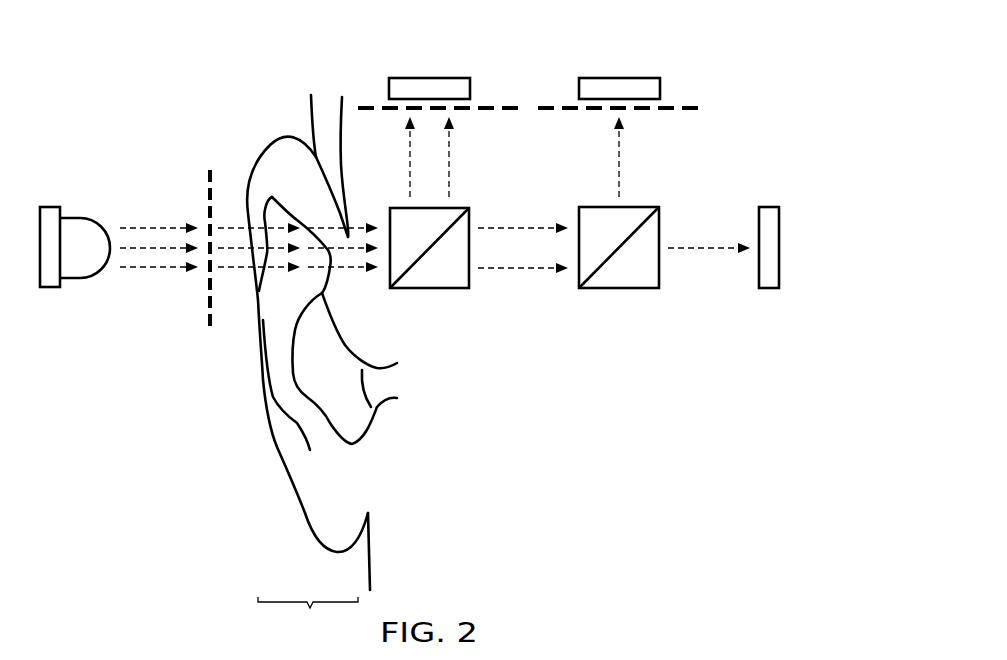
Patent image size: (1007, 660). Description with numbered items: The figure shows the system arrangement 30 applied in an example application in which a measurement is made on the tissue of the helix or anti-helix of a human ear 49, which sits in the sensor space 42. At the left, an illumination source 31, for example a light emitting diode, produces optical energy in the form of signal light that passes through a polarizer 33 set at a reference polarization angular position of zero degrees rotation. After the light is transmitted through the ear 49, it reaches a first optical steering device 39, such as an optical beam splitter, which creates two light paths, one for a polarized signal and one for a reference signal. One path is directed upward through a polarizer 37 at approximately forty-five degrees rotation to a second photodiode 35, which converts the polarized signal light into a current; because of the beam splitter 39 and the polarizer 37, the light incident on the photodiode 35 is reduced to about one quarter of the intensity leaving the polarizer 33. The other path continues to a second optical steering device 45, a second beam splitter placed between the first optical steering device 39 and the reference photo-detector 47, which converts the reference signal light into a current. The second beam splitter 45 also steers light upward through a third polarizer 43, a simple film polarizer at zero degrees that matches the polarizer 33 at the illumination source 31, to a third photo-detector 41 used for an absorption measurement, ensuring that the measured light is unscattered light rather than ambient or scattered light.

The system arrangement 30 is at (94, 60).
The illumination source 31 is at (68, 280).
The polarizer 33 is at (208, 173).
The second photodiode 35 is at (430, 77).
The polarizer 37 is at (393, 112).
The first optical steering device 39 is at (430, 290).
The third photo-detector 41 is at (630, 77).
The sensor space 42 is at (308, 620).
The third polarizer 43 is at (667, 112).
The second optical steering device 45 is at (630, 290).
The reference photo-detector 47 is at (780, 238).
The human ear 49 is at (305, 522).